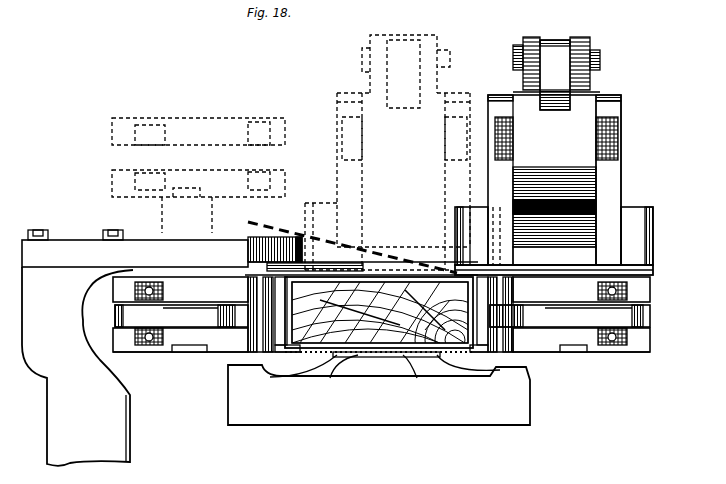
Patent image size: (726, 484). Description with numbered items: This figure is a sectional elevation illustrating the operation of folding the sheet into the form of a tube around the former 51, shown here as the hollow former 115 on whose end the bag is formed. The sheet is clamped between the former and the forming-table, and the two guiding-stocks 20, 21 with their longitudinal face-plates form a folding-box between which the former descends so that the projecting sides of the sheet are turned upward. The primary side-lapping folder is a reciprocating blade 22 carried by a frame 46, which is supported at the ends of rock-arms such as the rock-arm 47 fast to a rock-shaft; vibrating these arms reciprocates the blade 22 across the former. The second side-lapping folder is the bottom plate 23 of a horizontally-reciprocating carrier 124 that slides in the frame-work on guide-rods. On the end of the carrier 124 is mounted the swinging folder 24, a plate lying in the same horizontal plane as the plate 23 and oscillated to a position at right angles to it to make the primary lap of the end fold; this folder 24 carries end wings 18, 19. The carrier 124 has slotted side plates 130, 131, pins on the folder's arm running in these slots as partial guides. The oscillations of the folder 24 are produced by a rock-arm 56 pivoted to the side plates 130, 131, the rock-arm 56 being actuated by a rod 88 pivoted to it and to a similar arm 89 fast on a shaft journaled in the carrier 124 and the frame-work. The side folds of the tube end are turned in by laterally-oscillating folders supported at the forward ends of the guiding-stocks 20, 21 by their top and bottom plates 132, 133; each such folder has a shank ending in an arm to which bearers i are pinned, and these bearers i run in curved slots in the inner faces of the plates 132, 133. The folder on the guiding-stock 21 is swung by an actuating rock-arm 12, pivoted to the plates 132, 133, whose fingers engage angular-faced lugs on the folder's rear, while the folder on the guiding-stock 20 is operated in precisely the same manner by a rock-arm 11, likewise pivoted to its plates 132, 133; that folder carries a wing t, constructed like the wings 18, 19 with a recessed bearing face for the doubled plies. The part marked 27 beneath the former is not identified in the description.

The rock-arm 11 is at (570, 316).
The actuating rock-arm 12 is at (181, 316).
The end wing 18 is at (463, 233).
The end wing 19 is at (646, 244).
The guiding-stock 20 is at (647, 290).
The guiding-stock 21 is at (107, 291).
The reciprocating blade 22 is at (315, 259).
The bottom plate 23 is at (554, 256).
The swinging folder 24 is at (641, 207).
The work piece 27 is at (383, 356).
The frame 46 is at (250, 252).
The rock-arm 47 is at (77, 366).
The former 51 is at (390, 328).
The rock-arm 56 is at (554, 180).
The rod 88 is at (556, 73).
The arm 89 is at (523, 78).
The hollow former 115 is at (380, 312).
The horizontally-reciprocating carrier 124 is at (434, 154).
The side plate 130 is at (542, 207).
The side plate 131 is at (608, 183).
The top plate 132 is at (381, 289).
The bottom plate 133 is at (381, 340).
The bearers i is at (222, 353).
The wing t is at (540, 353).